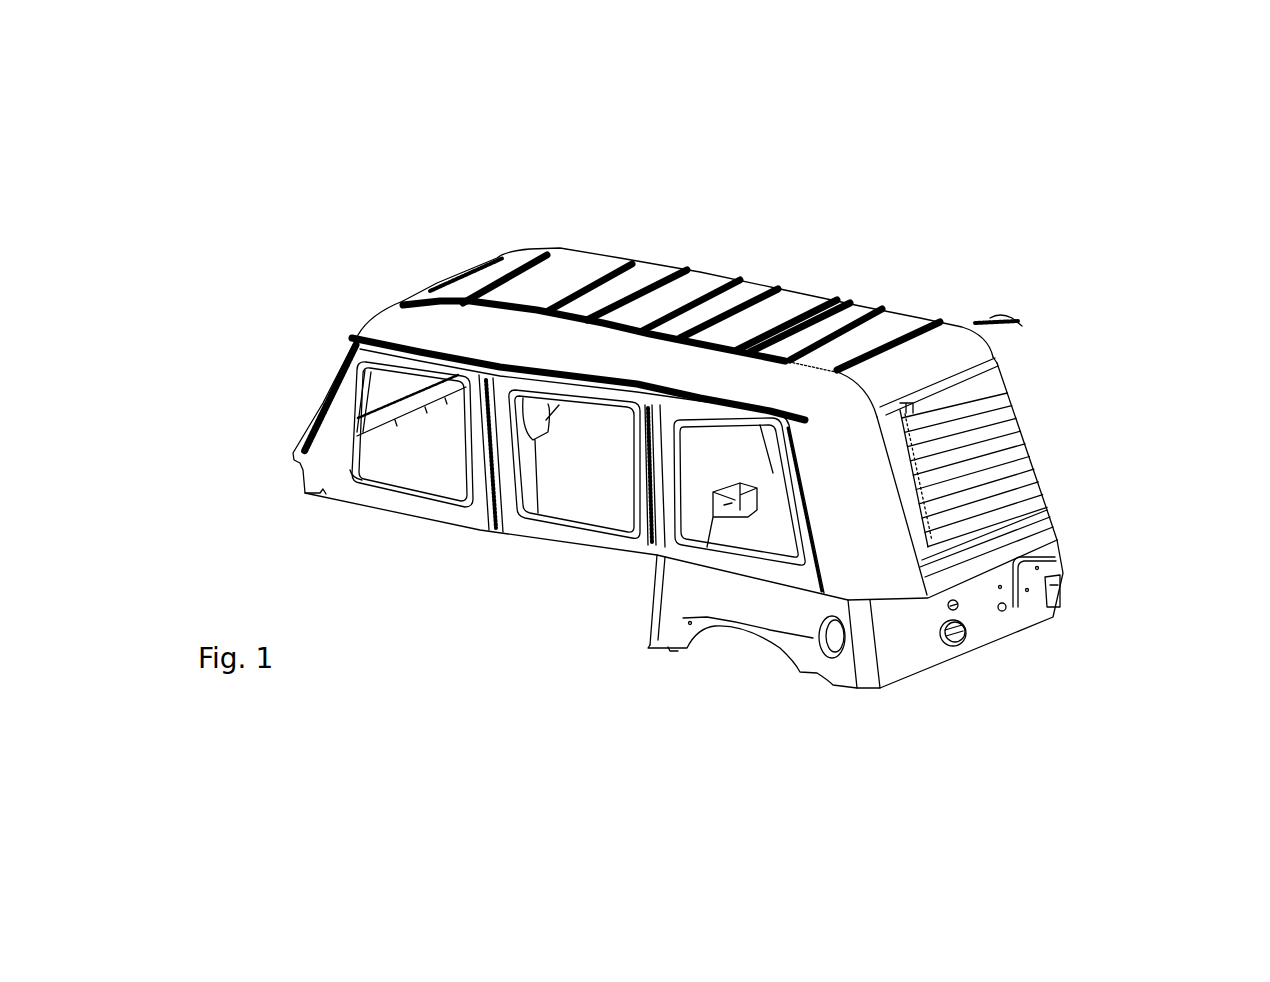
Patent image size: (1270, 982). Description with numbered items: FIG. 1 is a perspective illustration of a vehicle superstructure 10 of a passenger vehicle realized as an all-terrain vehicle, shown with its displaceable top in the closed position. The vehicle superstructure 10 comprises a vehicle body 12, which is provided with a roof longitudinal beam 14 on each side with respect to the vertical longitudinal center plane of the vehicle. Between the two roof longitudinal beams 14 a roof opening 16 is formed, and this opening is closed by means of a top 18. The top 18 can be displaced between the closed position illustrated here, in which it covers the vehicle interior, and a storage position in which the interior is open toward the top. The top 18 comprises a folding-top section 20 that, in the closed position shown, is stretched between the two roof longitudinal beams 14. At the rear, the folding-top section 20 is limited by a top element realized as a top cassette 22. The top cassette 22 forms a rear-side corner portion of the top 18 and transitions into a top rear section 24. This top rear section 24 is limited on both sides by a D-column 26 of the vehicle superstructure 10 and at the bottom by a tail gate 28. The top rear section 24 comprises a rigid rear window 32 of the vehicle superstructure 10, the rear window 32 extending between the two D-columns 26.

The vehicle superstructure 10 is at (787, 278).
The vehicle body 12 is at (655, 650).
The roof longitudinal beam 14 is at (386, 308).
The roof opening 16 is at (462, 301).
The top 18 is at (561, 249).
The folding-top section 20 is at (644, 259).
The top cassette 22 is at (963, 320).
The top rear section 24 is at (1013, 407).
The D-column 26 is at (870, 598).
The tail gate 28 is at (997, 640).
The rear window 32 is at (1025, 437).